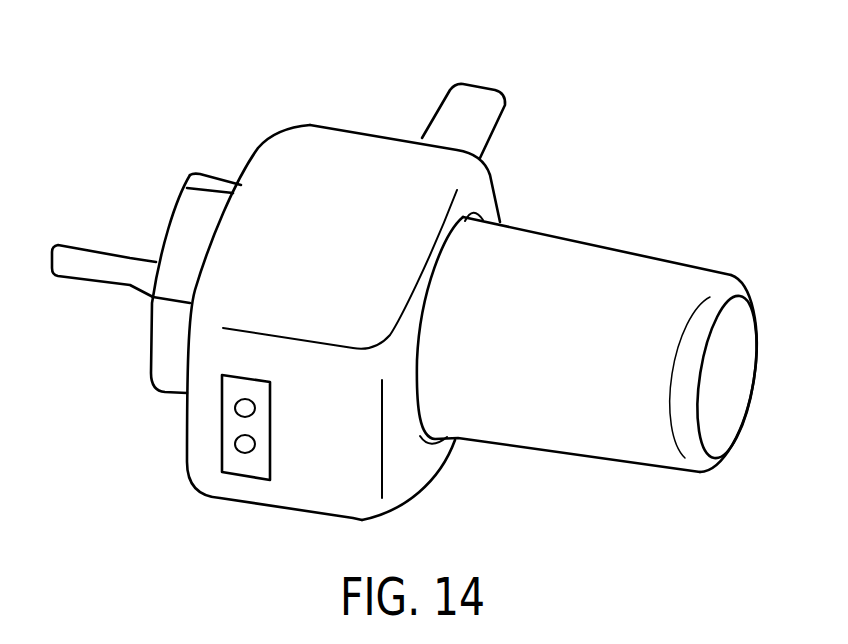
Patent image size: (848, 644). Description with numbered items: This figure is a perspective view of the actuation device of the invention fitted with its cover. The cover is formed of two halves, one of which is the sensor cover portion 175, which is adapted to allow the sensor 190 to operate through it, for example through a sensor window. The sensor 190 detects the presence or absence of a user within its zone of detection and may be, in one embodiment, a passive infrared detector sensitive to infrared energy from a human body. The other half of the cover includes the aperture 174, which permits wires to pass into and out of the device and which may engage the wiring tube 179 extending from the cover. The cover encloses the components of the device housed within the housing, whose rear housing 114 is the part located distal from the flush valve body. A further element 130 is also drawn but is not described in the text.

The rear housing 114 is at (723, 292).
The rod 130 is at (77, 282).
The aperture 174 is at (305, 140).
The sensor cover portion 175 is at (392, 498).
The wiring tube 179 is at (482, 102).
The sensor 190 is at (245, 477).